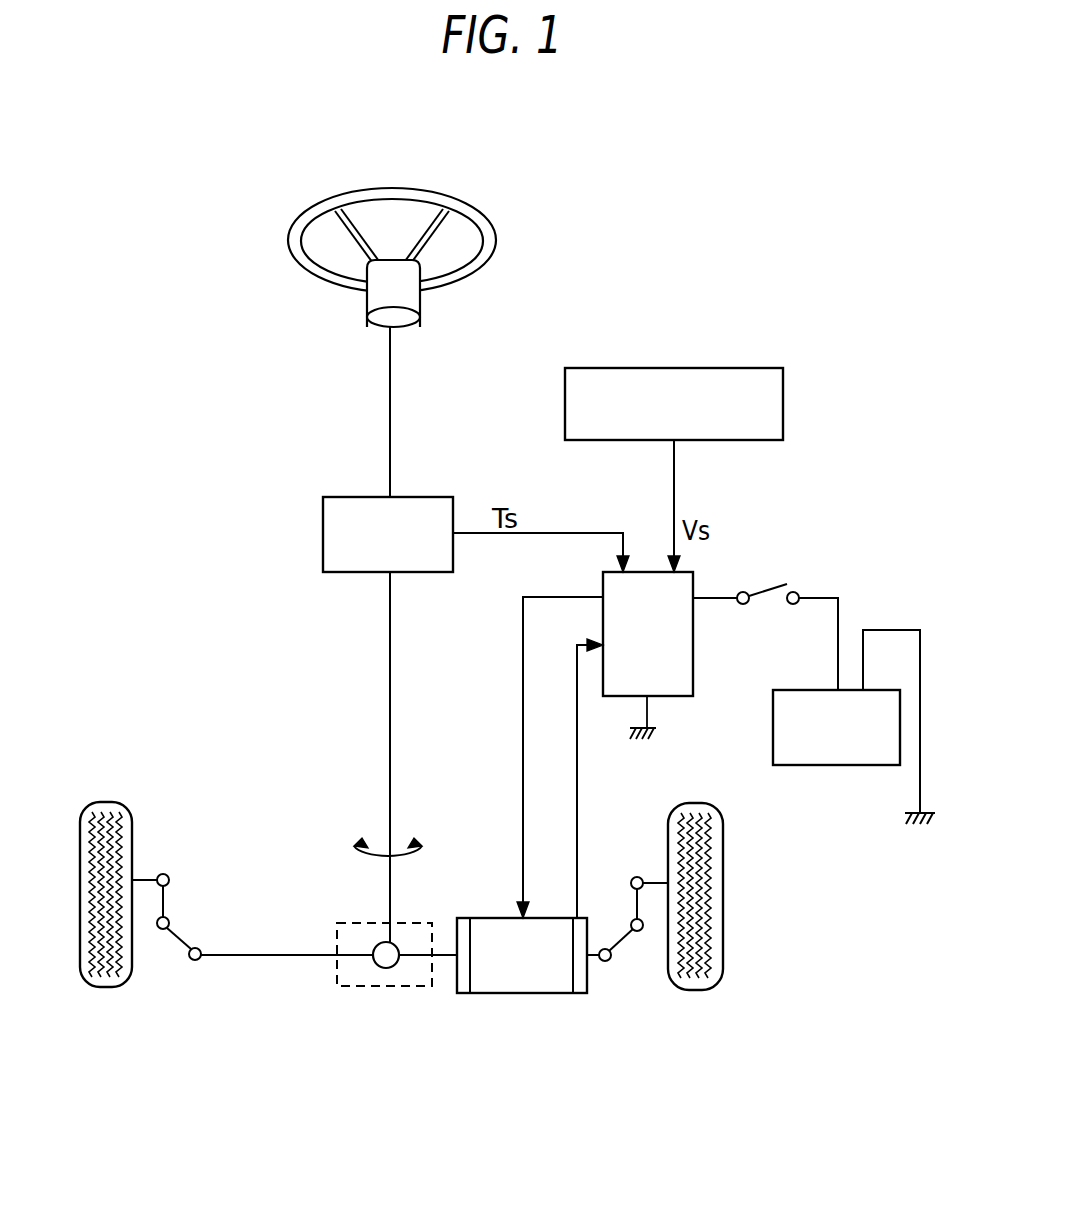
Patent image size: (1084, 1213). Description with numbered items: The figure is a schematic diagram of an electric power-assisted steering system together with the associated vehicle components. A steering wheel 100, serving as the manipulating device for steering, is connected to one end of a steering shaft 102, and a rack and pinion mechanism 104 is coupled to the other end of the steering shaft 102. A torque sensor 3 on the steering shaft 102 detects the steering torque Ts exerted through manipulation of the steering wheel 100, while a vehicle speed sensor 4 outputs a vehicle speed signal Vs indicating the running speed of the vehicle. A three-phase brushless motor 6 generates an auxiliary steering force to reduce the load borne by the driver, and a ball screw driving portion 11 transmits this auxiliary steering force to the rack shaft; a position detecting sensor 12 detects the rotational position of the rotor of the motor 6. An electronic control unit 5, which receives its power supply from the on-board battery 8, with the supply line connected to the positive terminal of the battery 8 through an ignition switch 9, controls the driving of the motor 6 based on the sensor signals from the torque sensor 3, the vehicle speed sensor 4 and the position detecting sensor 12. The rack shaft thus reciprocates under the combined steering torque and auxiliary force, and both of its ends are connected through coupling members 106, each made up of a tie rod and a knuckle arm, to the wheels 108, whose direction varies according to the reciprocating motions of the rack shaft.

The steering wheel 100 is at (497, 240).
The steering shaft 102 is at (391, 360).
The torque sensor 3 is at (323, 530).
The vehicle speed sensor 4 is at (672, 368).
The electronic control unit (ECU) 5 is at (693, 632).
The ignition switch 9 is at (770, 590).
The battery 8 is at (838, 765).
The 3-phase brushless motor 6 is at (525, 995).
The ball screw driving portion 11 is at (463, 995).
The position detecting sensor 12 is at (577, 995).
The rack and pinion mechanism 104 is at (393, 990).
The coupling member 106 is at (188, 931).
The wheel 108 is at (115, 987).